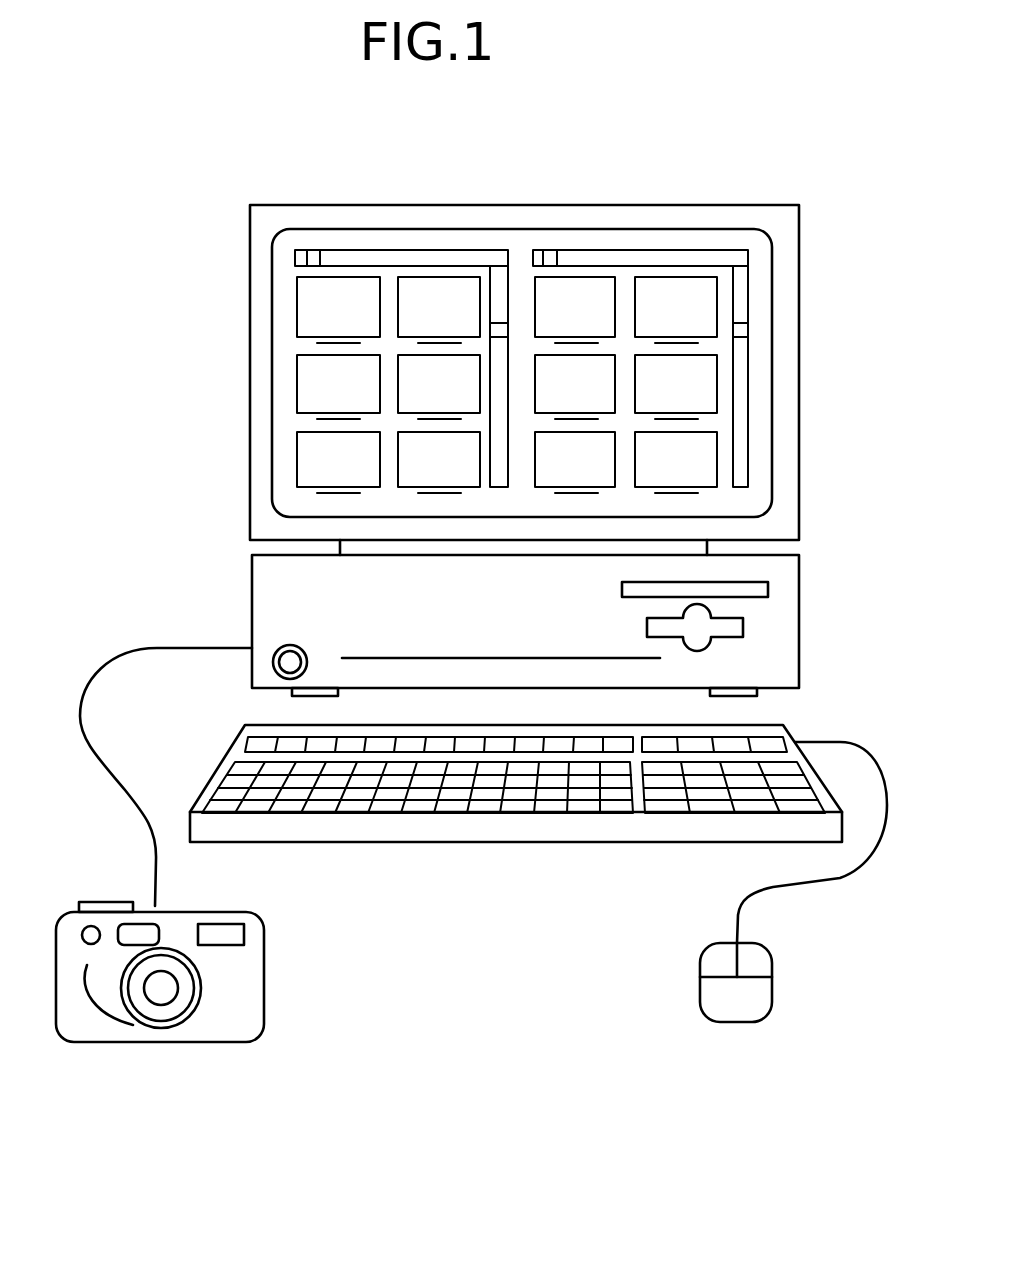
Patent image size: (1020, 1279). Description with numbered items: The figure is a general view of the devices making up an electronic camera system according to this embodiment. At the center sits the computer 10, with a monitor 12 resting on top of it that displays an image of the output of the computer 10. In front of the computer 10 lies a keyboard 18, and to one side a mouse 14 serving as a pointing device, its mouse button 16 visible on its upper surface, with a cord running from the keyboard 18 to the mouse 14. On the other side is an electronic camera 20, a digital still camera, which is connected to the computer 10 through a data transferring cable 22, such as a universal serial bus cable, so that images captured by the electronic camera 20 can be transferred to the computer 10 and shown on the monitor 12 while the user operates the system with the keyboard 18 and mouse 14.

The computer 10 is at (799, 617).
The monitor 12 is at (799, 390).
The mouse 14 is at (775, 924).
The mouse button 16 is at (717, 957).
The keyboard 18 is at (482, 842).
The electronic camera 20 is at (264, 979).
The data transferring cable 22 is at (168, 648).